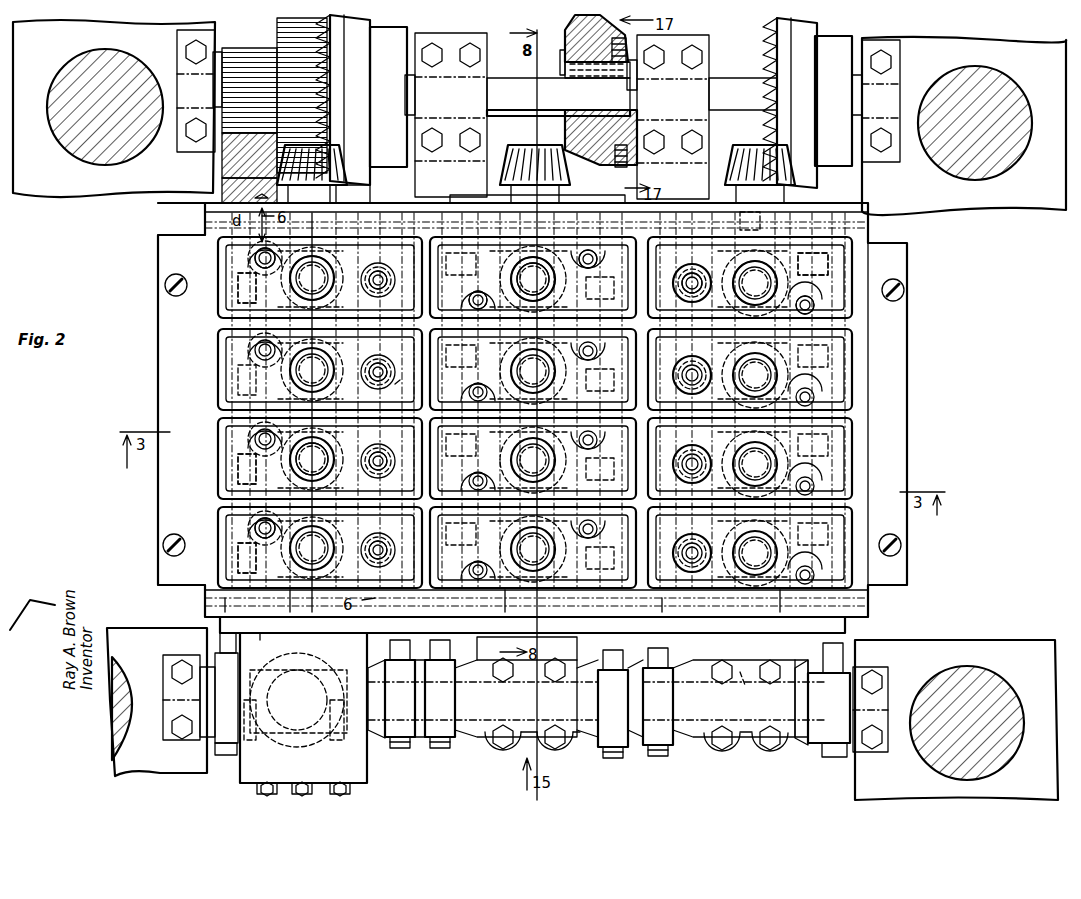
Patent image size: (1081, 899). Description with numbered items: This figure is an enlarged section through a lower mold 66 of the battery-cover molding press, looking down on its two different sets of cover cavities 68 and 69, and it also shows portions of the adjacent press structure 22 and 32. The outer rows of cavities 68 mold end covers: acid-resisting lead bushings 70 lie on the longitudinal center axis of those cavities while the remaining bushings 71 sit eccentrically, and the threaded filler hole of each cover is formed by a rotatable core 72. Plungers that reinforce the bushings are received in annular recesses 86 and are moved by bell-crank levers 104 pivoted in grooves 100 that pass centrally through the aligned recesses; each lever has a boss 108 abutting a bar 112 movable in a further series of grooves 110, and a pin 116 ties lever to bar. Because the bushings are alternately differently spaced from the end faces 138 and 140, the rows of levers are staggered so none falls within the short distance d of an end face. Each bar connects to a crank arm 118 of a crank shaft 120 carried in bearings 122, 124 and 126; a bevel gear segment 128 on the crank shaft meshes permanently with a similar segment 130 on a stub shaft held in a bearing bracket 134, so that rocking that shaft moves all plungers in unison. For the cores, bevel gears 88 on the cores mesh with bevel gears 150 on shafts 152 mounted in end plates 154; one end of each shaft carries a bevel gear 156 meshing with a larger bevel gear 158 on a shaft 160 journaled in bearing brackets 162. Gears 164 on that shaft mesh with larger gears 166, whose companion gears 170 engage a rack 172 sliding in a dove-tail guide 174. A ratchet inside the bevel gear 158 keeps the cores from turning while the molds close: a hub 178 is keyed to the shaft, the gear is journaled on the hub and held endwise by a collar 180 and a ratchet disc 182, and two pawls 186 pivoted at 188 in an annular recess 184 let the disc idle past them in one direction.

The cylinder 22 is at (125, 62).
The side frame wall 32 is at (52, 180).
The lower mold 66 is at (902, 378).
The cover cavities 68 is at (225, 412).
The cover cavities 69 is at (550, 419).
The lead bushings 70 is at (375, 288).
The bushings 71 is at (255, 258).
The threaded core 72 is at (330, 272).
The annular recesses 86 is at (213, 494).
The bevel gears 88 is at (364, 451).
The grooves 100 is at (262, 596).
The bell-crank levers 104 is at (262, 278).
The boss 108 is at (245, 540).
The grooves 110 is at (225, 600).
The bars 112 is at (218, 655).
The pin 116 is at (245, 462).
The crank arm 118 is at (440, 720).
The crank shaft 120 is at (735, 672).
The bearing 122 is at (245, 740).
The bearing 124 is at (572, 750).
The bearing 126 is at (820, 735).
The bevel gear segment 128 is at (340, 742).
The bevel gear segment 130 is at (310, 660).
The bearing bracket 134 is at (360, 768).
The end face 138 is at (290, 640).
The end face 140 is at (432, 203).
The bevel gears 150 is at (336, 451).
The shafts 152 is at (375, 380).
The end plates 154 is at (362, 200).
The bevel gear 156 is at (355, 195).
The bevel gear 158 is at (350, 63).
The shaft 160 is at (502, 115).
The bearing brackets 162 is at (228, 28).
The gears 164 is at (310, 90).
The gears 166 is at (290, 33).
The gears 170 is at (222, 60).
The rack 172 is at (230, 155).
The dove-tail guide 174 is at (232, 188).
The hub 178 is at (575, 78).
The collar 180 is at (566, 65).
The ratchet disc 182 is at (630, 118).
The annular recess 184 is at (626, 160).
The pawls 186 is at (650, 80).
The pivot 188 is at (618, 40).